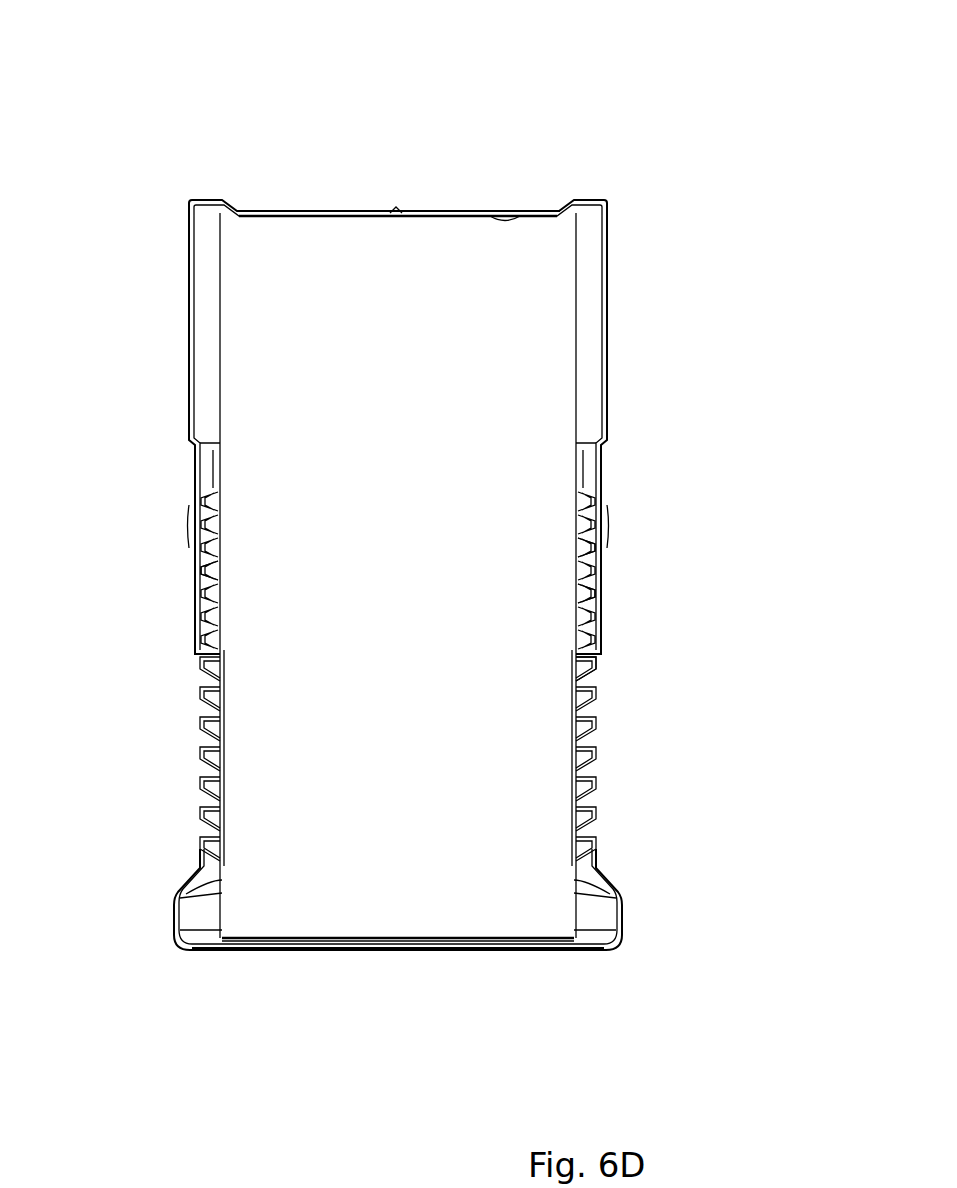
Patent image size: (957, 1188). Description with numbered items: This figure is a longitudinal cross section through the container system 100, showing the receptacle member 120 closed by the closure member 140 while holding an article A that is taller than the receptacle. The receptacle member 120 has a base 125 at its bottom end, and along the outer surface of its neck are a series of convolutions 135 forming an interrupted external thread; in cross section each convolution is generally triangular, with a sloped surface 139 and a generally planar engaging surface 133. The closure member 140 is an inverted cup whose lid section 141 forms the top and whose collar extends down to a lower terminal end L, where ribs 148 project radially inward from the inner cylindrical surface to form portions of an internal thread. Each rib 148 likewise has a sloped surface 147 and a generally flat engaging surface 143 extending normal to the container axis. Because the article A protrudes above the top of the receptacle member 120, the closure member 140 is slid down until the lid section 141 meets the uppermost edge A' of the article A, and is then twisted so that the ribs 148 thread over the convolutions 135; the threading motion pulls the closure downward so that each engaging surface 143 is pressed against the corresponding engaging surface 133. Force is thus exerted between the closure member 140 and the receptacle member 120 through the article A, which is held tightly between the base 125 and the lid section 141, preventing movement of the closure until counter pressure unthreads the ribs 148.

The container system 100 is at (674, 60).
The closure member 140 is at (657, 253).
The lid section 141 is at (411, 210).
The uppermost edge of the article A' is at (529, 191).
The lower terminal end of the closure member L is at (217, 201).
The article A is at (398, 576).
The receptacle member 120 is at (650, 743).
The base 125 is at (641, 937).
The engaging surface of the convolution 133 is at (600, 546).
The engaging surface of the rib 143 is at (603, 545).
The sloped surface of the rib 147 is at (600, 606).
The sloped surface of the convolution 139 is at (600, 663).
The convolutions 135 is at (197, 512).
The ribs 148 is at (200, 578).